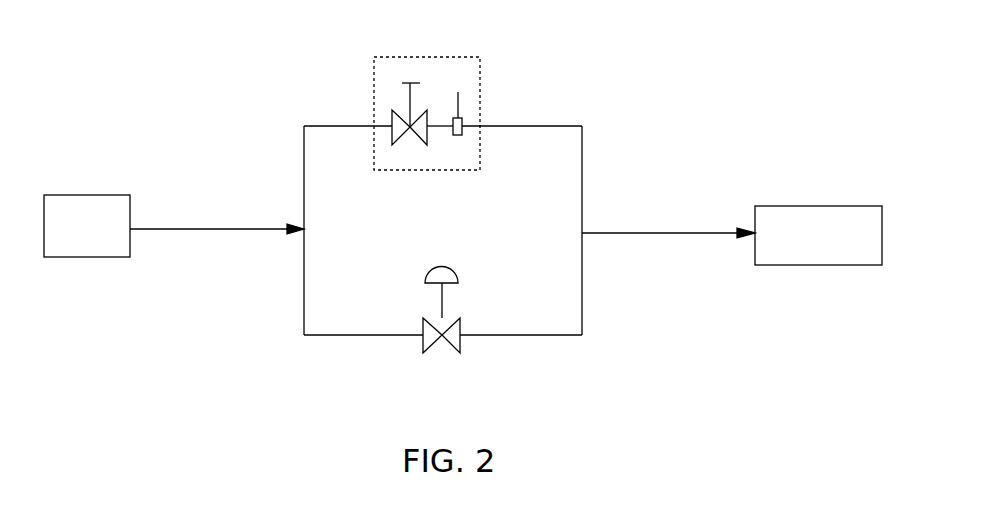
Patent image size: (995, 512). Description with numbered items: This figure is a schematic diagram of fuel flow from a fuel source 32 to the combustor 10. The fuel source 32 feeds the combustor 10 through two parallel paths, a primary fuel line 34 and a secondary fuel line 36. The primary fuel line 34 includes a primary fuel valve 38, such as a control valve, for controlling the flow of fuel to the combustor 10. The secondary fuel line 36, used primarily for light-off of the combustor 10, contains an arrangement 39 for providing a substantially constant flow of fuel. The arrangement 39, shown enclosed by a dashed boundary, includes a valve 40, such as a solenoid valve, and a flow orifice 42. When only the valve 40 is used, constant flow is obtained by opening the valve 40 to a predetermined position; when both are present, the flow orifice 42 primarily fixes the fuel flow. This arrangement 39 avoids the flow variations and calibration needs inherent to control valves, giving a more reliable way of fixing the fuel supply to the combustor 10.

The combustor 10 is at (817, 265).
The fuel source 32 is at (87, 257).
The primary fuel line 34 is at (535, 344).
The secondary fuel line 36 is at (535, 119).
The primary fuel valve 38 is at (423, 342).
The arrangement 39 is at (375, 57).
The valve 40 is at (408, 97).
The flow orifice 42 is at (458, 92).